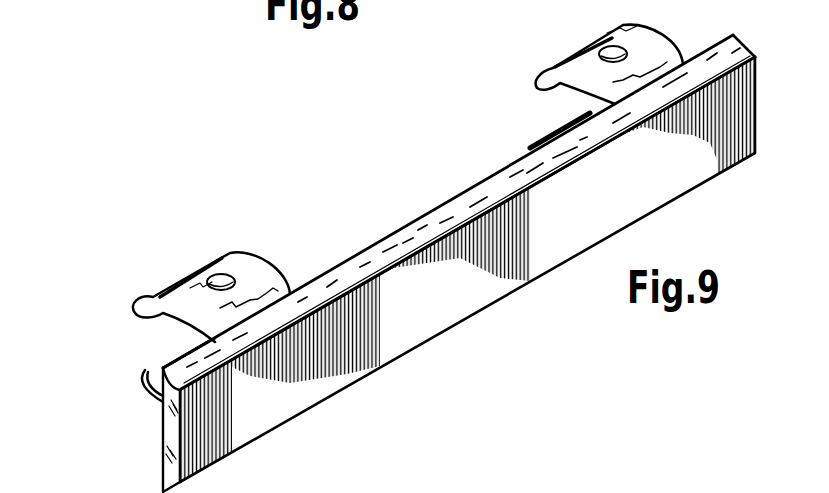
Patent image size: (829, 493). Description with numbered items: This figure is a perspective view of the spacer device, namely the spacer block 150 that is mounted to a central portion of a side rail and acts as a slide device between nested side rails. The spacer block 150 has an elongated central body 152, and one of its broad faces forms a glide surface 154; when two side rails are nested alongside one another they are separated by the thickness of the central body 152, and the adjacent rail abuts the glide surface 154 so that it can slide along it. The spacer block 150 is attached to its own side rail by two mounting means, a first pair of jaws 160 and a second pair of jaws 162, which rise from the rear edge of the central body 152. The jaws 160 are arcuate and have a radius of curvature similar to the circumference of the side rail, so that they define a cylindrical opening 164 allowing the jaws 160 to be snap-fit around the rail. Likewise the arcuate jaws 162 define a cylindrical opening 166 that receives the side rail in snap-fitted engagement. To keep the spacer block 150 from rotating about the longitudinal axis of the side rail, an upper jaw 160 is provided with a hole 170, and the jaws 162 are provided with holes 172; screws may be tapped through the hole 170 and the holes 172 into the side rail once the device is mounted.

In FIG. 9, the spacer block 150 is at (395, 246).
In FIG. 8, the central body 152 is at (168, 2).
In FIG. 9, the glide surface 154 is at (425, 318).
In FIG. 9, the first pair of jaws 160 is at (160, 287).
In FIG. 9, the second pair of jaws 162 is at (586, 52).
In FIG. 9, the cylindrical opening 164 is at (143, 341).
In FIG. 9, the cylindrical opening 166 is at (550, 110).
In FIG. 9, the hole 170 is at (223, 274).
In FIG. 9, the holes 172 is at (607, 45).